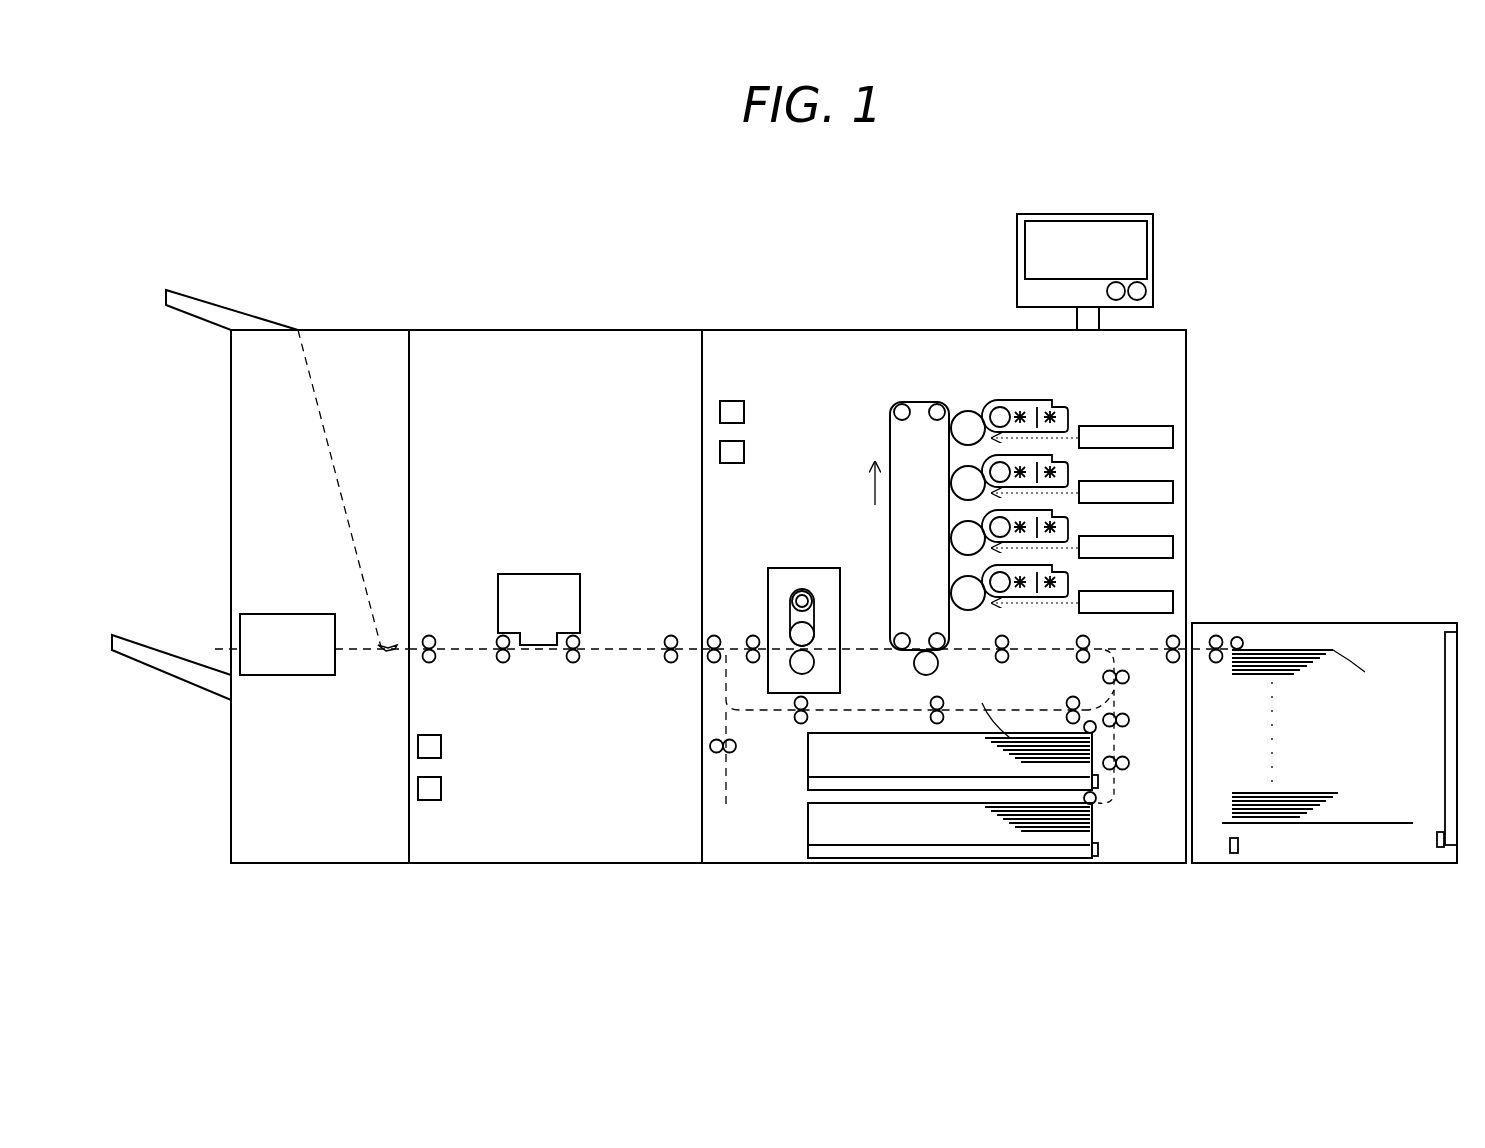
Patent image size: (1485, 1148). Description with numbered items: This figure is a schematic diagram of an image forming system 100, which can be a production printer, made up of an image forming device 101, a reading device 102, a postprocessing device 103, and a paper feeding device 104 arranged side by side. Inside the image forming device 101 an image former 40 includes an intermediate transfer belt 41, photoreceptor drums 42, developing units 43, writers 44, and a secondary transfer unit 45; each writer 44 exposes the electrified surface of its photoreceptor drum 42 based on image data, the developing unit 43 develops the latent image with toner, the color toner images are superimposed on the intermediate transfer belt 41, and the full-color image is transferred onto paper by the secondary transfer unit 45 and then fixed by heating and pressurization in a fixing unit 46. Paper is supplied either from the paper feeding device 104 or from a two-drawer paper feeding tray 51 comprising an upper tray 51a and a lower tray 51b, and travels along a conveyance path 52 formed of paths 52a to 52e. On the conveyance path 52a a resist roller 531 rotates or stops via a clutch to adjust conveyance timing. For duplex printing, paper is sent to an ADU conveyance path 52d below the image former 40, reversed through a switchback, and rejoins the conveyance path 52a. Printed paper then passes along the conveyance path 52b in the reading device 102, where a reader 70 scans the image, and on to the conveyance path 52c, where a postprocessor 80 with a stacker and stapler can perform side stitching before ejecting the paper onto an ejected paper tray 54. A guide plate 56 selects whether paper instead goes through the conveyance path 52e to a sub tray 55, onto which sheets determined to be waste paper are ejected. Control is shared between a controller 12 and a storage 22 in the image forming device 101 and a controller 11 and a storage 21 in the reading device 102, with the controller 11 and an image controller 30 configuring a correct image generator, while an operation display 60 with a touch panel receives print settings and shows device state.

The image forming system 100 is at (288, 182).
The image forming device 101 is at (848, 305).
The reading device 102 is at (553, 305).
The postprocessing device 103 is at (328, 305).
The paper feeding device 104 is at (1316, 590).
The sub tray 55 is at (200, 290).
The ejected paper tray 54 is at (149, 647).
The guide plate 56 is at (377, 643).
The operation display 60 is at (1157, 262).
The postprocessor 80 is at (300, 614).
The reader 70 is at (548, 574).
The controller 11 is at (441, 748).
The storage 21 is at (441, 790).
The controller 12 is at (744, 412).
The image controller 30 is at (732, 412).
The storage 22 is at (744, 458).
The image former 40 is at (992, 522).
The intermediate transfer belt 41 is at (915, 402).
The photoreceptor drum 42 is at (966, 411).
The developing unit 43 is at (1020, 400).
The writer 44 is at (1093, 426).
The secondary transfer unit 45 is at (914, 667).
The fixing unit 46 is at (786, 568).
The paper feeding tray 51 is at (912, 798).
The upper tray 51a is at (808, 770).
The lower tray 51b is at (923, 826).
The conveyance path 52 is at (1137, 638).
The conveyance path 52a is at (1020, 650).
The conveyance path 52b is at (597, 650).
The conveyance path 52c is at (360, 655).
The ADU conveyance path 52d is at (752, 711).
The conveyance path 52e is at (336, 468).
The resist roller 531 is at (1006, 660).